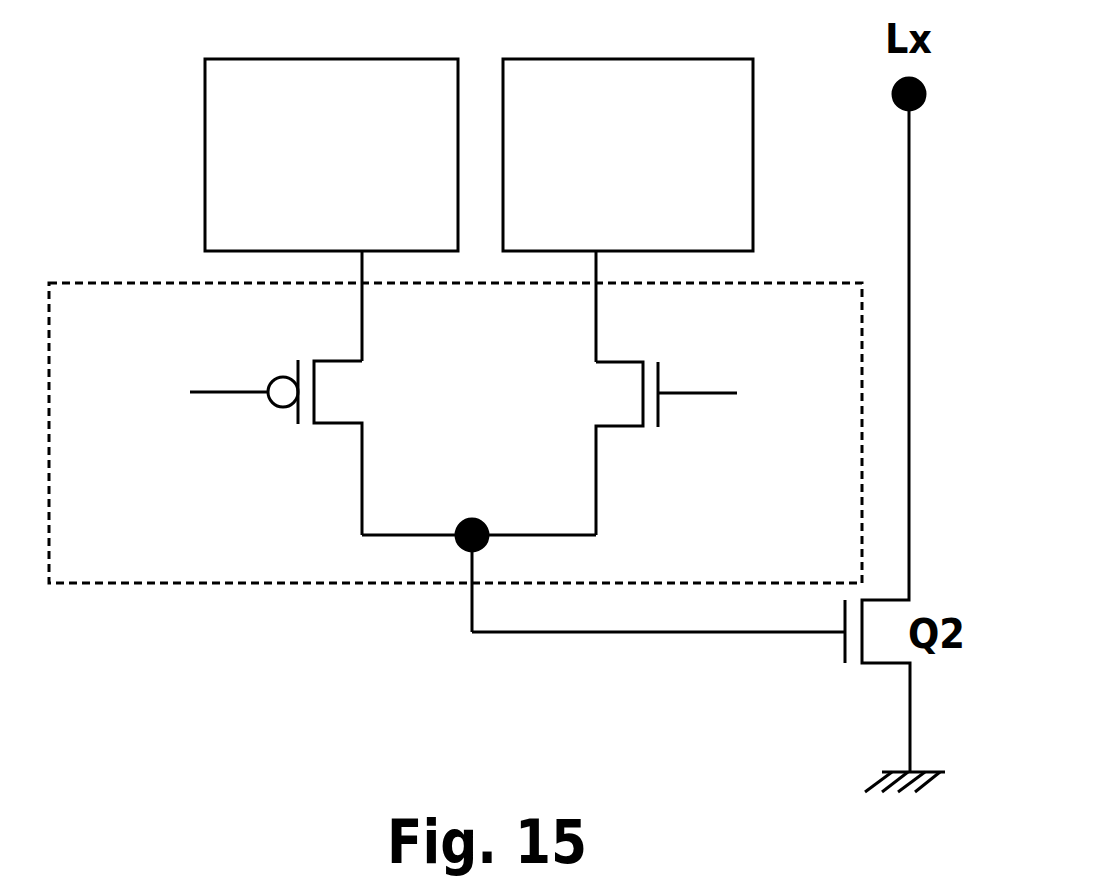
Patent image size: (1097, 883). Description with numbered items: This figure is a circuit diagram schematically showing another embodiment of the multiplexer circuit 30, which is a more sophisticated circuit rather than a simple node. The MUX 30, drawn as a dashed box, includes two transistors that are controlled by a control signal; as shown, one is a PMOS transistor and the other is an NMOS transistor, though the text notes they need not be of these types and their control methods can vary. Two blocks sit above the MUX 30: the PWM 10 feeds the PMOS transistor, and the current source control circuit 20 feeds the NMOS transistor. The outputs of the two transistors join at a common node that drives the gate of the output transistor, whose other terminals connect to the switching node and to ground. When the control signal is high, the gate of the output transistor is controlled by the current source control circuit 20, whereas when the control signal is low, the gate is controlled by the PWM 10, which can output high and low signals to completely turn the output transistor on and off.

The PWM 10 is at (355, 207).
The current source control circuit 20 is at (603, 208).
The multiplexer circuit 30 is at (167, 583).